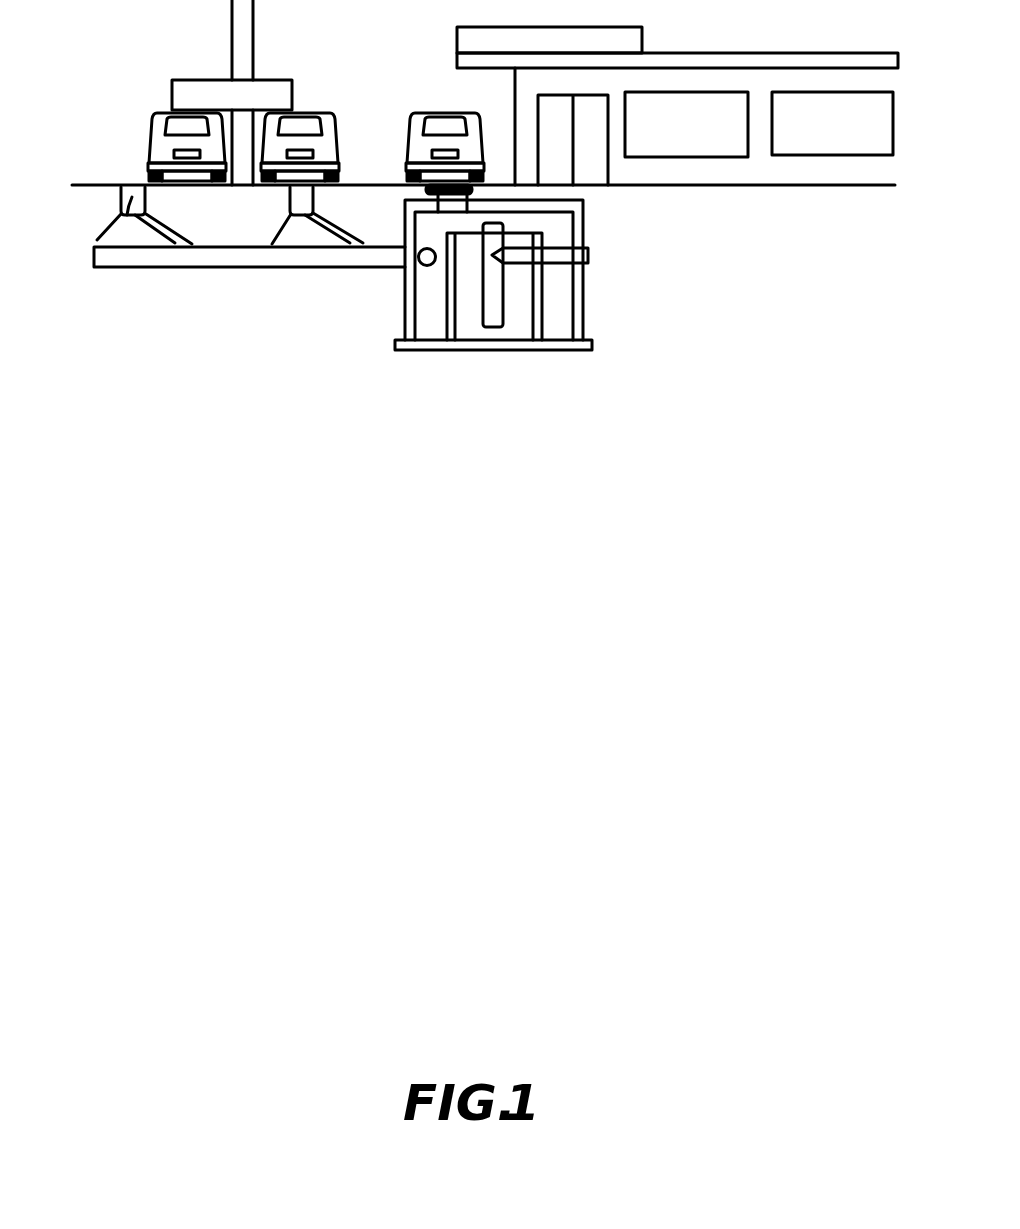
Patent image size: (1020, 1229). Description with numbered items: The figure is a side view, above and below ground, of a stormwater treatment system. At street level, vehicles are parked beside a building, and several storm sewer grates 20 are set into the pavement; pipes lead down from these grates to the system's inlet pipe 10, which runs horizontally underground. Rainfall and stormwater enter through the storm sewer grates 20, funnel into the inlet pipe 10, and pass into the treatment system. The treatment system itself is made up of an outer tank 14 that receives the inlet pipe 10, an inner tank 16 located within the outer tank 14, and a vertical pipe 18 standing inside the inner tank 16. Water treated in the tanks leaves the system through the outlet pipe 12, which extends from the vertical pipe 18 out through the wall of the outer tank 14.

The inlet pipe 10 is at (186, 266).
The outlet pipe 12 is at (588, 252).
The outer tank 14 is at (405, 288).
The inner tank 16 is at (460, 304).
The vertical pipe 18 is at (508, 304).
The storm sewer grates 20 is at (93, 240).